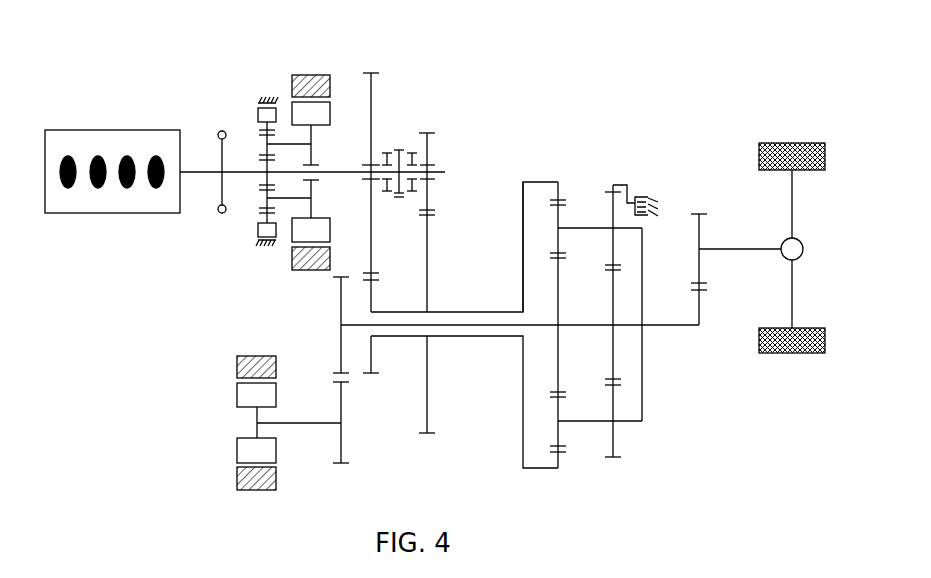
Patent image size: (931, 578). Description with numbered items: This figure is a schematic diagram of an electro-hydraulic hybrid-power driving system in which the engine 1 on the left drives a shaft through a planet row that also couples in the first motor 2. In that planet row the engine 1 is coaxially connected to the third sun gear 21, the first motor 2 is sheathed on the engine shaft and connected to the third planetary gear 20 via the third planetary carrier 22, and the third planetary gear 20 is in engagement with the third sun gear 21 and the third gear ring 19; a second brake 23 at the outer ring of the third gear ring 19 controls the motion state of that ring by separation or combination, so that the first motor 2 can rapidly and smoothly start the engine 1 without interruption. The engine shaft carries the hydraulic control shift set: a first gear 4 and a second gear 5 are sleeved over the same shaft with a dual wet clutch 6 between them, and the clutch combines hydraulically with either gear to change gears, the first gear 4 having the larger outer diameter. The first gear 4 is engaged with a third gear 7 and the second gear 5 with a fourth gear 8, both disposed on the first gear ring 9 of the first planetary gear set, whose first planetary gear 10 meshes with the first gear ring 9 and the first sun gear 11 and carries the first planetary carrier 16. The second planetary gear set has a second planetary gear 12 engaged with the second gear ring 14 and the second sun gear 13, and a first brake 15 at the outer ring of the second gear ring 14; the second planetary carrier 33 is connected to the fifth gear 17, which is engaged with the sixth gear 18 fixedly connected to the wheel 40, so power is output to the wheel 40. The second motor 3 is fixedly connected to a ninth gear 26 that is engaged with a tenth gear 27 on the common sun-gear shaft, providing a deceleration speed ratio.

The engine 1 is at (45, 213).
The first motor 2 is at (290, 75).
The second motor 3 is at (237, 368).
The first gear 4 is at (371, 125).
The second gear 5 is at (428, 150).
The dual wet clutch 6 is at (400, 148).
The third gear 7 is at (372, 300).
The fourth gear 8 is at (427, 272).
The first gear ring 9 is at (558, 182).
The first planetary gear 10 is at (560, 222).
The first sun gear 11 is at (558, 312).
The second planetary gear 12 is at (613, 233).
The second sun gear 13 is at (613, 295).
The second gear ring 14 is at (622, 184).
The first brake 15 is at (650, 206).
The first planetary carrier 16 is at (604, 225).
The fifth gear 17 is at (700, 311).
The sixth gear 18 is at (700, 235).
The third gear ring 19 is at (265, 131).
The third planetary gear 20 is at (267, 152).
The third sun gear 21 is at (266, 178).
The third planetary carrier 22 is at (278, 145).
The second brake 23 is at (262, 103).
The ninth gear 26 is at (341, 437).
The tenth gear 27 is at (341, 308).
The second planetary carrier 33 is at (643, 262).
The wheel 40 is at (826, 140).